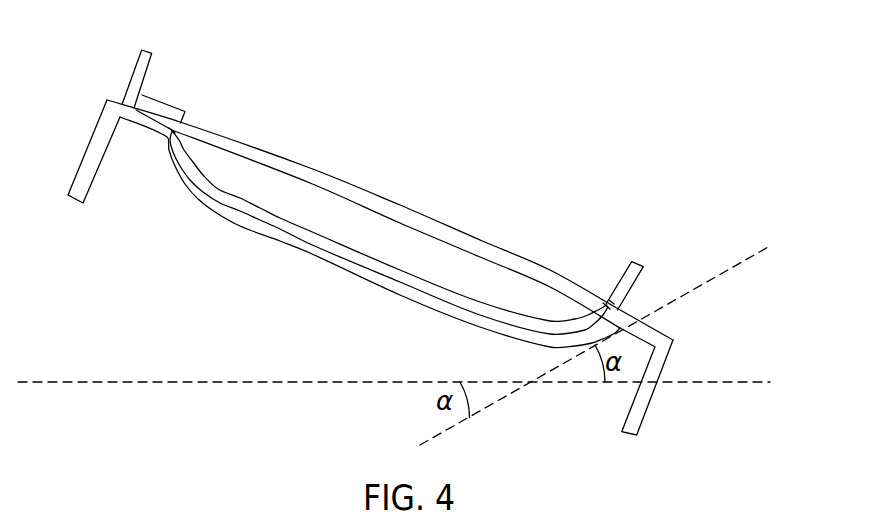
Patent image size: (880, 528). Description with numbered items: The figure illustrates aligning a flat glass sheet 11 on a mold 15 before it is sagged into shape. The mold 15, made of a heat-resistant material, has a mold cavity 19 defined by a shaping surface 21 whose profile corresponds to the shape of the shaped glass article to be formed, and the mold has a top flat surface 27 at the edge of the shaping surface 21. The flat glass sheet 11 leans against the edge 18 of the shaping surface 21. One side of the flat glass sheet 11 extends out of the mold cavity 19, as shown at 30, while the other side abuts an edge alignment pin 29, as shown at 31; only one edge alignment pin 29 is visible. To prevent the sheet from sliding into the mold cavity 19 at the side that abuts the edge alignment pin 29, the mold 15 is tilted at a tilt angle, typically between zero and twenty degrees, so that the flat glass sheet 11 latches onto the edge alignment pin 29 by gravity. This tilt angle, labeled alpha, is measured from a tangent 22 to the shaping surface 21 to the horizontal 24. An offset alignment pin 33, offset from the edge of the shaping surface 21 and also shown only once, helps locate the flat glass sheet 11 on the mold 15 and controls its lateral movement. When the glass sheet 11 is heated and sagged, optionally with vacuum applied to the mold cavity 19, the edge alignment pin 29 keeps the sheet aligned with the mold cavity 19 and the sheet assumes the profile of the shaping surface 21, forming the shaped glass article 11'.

The flat glass sheet 11 is at (390, 220).
The shaped glass article 11' is at (389, 232).
The mold 15 is at (93, 138).
The edge of the shaping surface 18 is at (608, 306).
The mold cavity 19 is at (324, 216).
The shaping surface 21 is at (172, 131).
The tangent to the shaping surface 22 is at (608, 336).
The horizontal 24 is at (411, 382).
The top surface of the mold 27 is at (168, 128).
The edge alignment pin 29 is at (640, 266).
The side of the flat glass sheet extending out of the mold cavity 30 is at (153, 105).
The side of the flat glass sheet abutting the edge alignment pins 31 is at (612, 302).
The offset alignment pin 33 is at (138, 60).